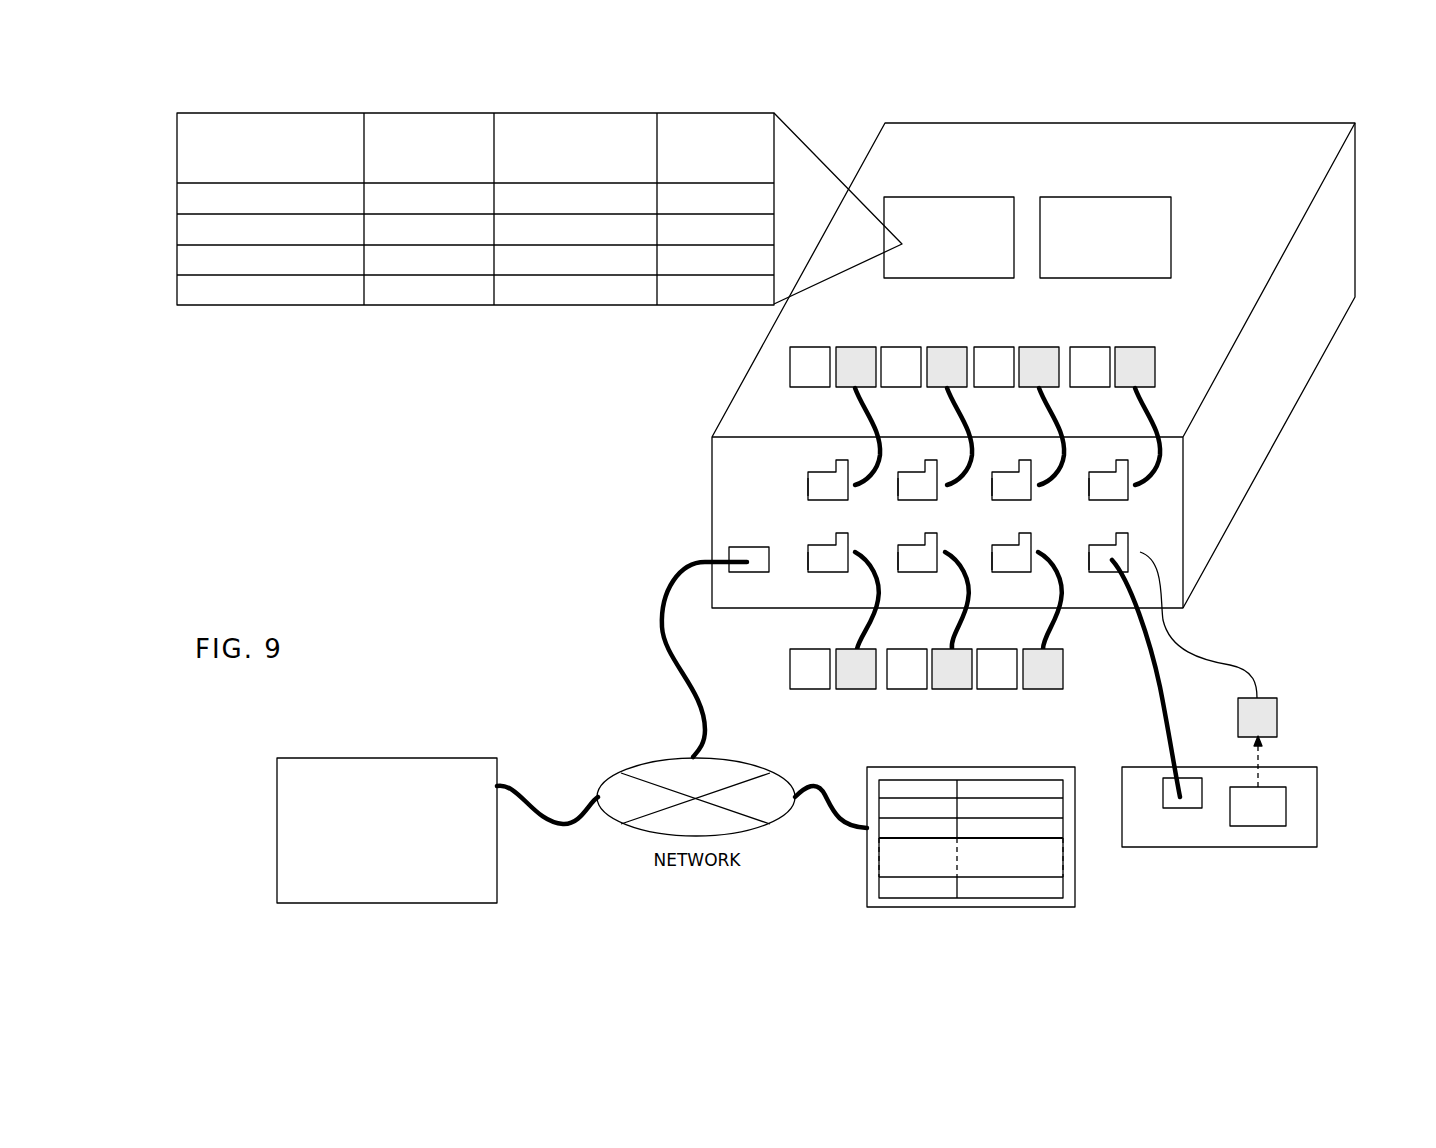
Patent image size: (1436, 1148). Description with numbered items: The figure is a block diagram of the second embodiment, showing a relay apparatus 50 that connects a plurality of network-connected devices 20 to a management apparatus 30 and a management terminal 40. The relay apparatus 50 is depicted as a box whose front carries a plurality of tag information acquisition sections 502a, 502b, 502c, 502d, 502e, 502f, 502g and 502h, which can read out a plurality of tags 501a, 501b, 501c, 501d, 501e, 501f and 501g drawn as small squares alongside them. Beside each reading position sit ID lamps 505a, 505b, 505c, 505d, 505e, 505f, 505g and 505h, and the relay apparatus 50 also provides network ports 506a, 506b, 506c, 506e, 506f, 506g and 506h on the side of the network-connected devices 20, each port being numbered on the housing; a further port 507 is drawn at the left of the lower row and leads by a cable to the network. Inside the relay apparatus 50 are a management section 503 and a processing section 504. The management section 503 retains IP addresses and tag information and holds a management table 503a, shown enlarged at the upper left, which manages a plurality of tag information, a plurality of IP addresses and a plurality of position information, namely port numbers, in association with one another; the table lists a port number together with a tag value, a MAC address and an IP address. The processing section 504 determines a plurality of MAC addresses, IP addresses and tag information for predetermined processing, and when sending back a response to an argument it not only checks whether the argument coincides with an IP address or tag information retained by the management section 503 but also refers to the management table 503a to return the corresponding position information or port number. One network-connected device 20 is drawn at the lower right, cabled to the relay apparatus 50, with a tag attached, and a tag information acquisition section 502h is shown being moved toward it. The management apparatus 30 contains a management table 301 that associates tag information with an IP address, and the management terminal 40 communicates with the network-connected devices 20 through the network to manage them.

The management table 503a is at (272, 306).
The relay apparatus 50 is at (750, 368).
The management section 503 is at (951, 197).
The processing section 504 is at (1123, 197).
The tag 501a is at (811, 347).
The tag 501b is at (901, 347).
The tag 501c is at (994, 347).
The tag 501d is at (1093, 347).
The tag 501e is at (810, 690).
The tag 501f is at (908, 690).
The tag 501g is at (998, 690).
The tag information acquisition section 502a is at (855, 347).
The tag information acquisition section 502b is at (949, 347).
The tag information acquisition section 502c is at (1041, 347).
The tag information acquisition section 502d is at (1140, 347).
The tag information acquisition section 502e is at (856, 690).
The tag information acquisition section 502f is at (953, 690).
The tag information acquisition section 502g is at (1045, 690).
The tag information acquisition section 502h is at (1278, 717).
The ID lamp 505a is at (841, 460).
The ID lamp 505b is at (931, 460).
The ID lamp 505c is at (1025, 460).
The ID lamp 505d is at (1122, 460).
The ID lamp 505e is at (836, 535).
The ID lamp 505f is at (925, 535).
The ID lamp 505g is at (1019, 535).
The ID lamp 505h is at (1116, 535).
The network port 506a is at (808, 486).
The network port 506b is at (898, 486).
The network port 506c is at (992, 486).
The network port 506e is at (1089, 486).
The network port 506f is at (908, 573).
The network port 506g is at (1002, 573).
The network port 506h is at (1099, 573).
The management port 507 is at (753, 573).
The management apparatus 30 is at (996, 817).
The management table 301 is at (1065, 879).
The network-connected device 20 is at (1181, 766).
The management terminal 40 is at (387, 758).